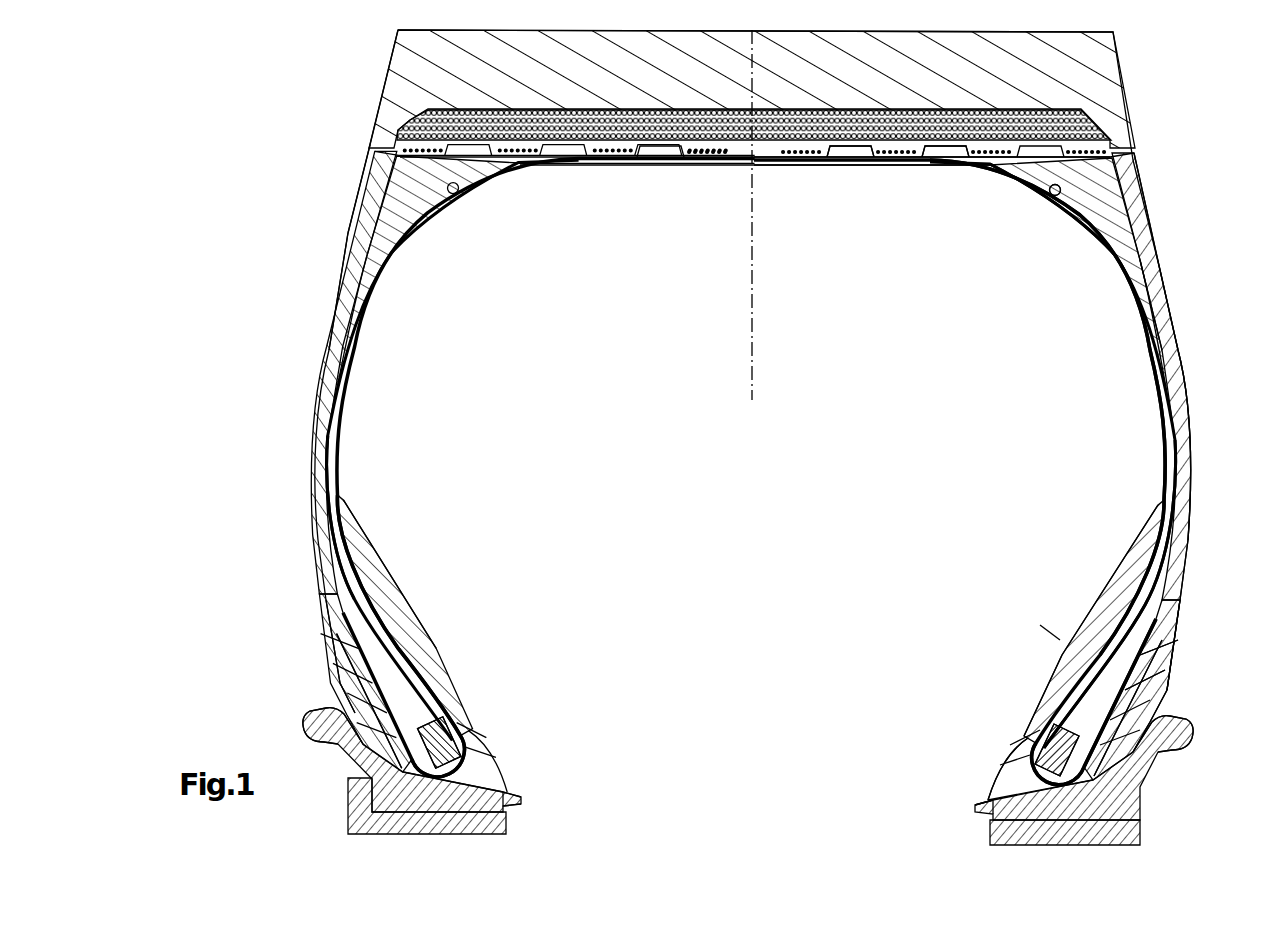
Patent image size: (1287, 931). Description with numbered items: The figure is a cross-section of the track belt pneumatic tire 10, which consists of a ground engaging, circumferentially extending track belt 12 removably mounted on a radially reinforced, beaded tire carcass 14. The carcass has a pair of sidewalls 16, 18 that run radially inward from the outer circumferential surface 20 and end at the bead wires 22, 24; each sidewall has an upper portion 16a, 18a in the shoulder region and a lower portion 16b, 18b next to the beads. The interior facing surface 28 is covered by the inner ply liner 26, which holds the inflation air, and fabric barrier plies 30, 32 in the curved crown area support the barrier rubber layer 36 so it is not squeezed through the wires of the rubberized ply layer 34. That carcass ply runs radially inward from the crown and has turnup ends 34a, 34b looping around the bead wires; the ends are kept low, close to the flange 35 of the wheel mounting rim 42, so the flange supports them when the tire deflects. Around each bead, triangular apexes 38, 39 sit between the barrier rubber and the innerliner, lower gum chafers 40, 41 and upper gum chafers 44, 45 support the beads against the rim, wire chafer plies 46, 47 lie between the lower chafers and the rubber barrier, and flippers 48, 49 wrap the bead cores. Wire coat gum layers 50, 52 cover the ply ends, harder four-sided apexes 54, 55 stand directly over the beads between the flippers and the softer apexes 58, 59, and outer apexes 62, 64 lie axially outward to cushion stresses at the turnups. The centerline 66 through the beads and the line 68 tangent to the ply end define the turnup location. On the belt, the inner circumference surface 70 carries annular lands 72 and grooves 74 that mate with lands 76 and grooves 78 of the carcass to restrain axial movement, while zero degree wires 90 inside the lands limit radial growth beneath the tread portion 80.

The track belt pneumatic tire 10 is at (1198, 416).
The track belt 12 is at (1130, 52).
The tire carcass 14 is at (1182, 246).
The tire sidewall 16 is at (1178, 285).
The upper portion of sidewall 16a is at (1135, 180).
The lower portion of sidewall 16b is at (1172, 672).
The tire sidewall 18 is at (318, 305).
The upper portion of sidewall 18a is at (362, 195).
The lower portion of sidewall 18b is at (330, 668).
The outer circumferential surface 20 is at (1078, 126).
The bead wire 22 is at (1130, 802).
The bead wire 24 is at (465, 735).
The inner ply liner 26 is at (1122, 565).
The interior facing surface 28 is at (1125, 355).
The fabric barrier ply 30 is at (943, 167).
The fabric barrier ply 32 is at (890, 160).
The rubberized laminated ply layer 34 is at (1055, 196).
The turnup end 34a is at (1132, 706).
The turnup end 34b is at (995, 820).
The flange 35 is at (1165, 752).
The barrier rubber layer 36 is at (1160, 425).
The apex 38 is at (1112, 608).
The apex 39 is at (372, 570).
The lower gum chafer 40 is at (985, 778).
The lower gum chafer 41 is at (487, 753).
The wheel mounting rim 42 is at (1090, 840).
The upper gum chafer 44 is at (1142, 684).
The upper gum chafer 45 is at (345, 712).
The wire chafer ply 46 is at (990, 797).
The wire chafer ply 47 is at (497, 785).
The flipper 48 is at (1030, 750).
The flipper 49 is at (432, 692).
The wire coat gum layer 50 is at (1172, 662).
The wire coat gum layer 52 is at (1105, 640).
The apex 54 is at (1035, 700).
The apex 55 is at (405, 662).
The apex 58 is at (1165, 605).
The apex 59 is at (395, 612).
The outer apex 62 is at (1178, 640).
The outer apex 64 is at (332, 580).
The centerline 66 is at (1025, 730).
The line 68 is at (1040, 625).
The inner circumference surface 70 is at (657, 148).
The annular land 72 is at (950, 154).
The groove 74 is at (838, 150).
The land 76 is at (1030, 174).
The groove 78 is at (980, 170).
The tread portion 80 is at (868, 75).
The zero degree wires 90 is at (703, 153).